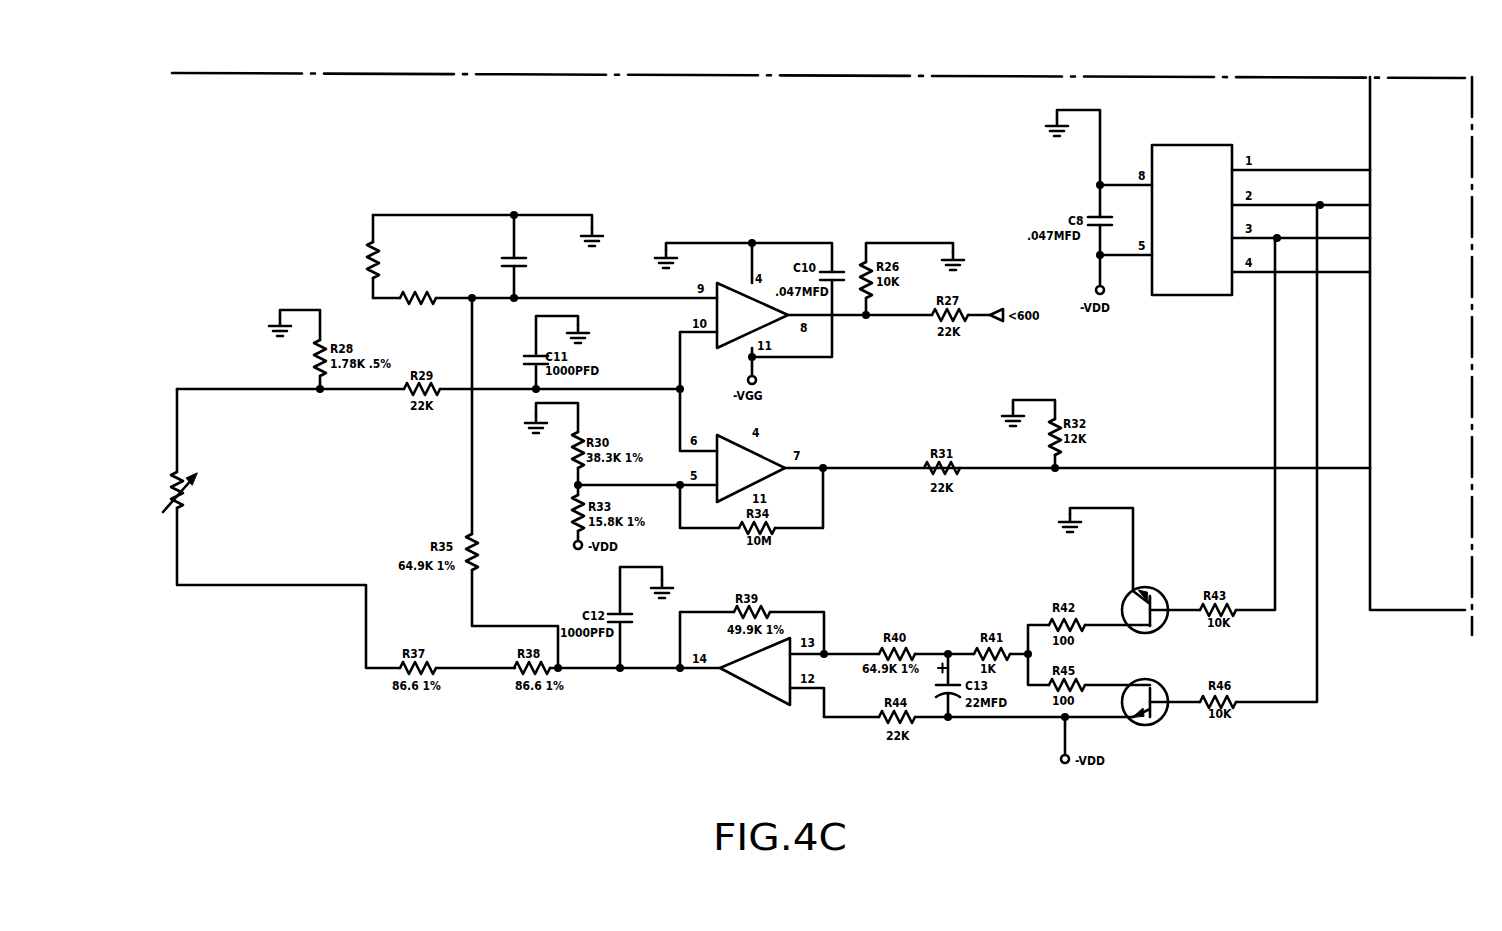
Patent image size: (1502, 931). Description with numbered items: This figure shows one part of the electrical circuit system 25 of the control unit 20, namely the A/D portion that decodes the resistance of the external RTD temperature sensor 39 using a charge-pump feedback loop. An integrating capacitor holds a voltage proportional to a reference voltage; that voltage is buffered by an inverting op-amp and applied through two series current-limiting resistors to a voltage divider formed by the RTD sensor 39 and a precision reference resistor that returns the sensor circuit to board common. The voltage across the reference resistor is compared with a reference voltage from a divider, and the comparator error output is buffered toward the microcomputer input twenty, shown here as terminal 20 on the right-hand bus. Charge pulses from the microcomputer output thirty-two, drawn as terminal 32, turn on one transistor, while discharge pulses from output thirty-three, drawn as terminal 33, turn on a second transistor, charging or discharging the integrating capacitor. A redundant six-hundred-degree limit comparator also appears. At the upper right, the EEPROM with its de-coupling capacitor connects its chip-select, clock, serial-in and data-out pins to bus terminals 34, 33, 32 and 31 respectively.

The system 25 is at (1157, 68).
The RTD temperature sensor 39 is at (200, 491).
The control unit 20 is at (1246, 463).
The D0 terminal 31 is at (1311, 268).
The D1 terminal 32 is at (1311, 234).
The D2 terminal 33 is at (1311, 201).
The D3 terminal 34 is at (1311, 166).